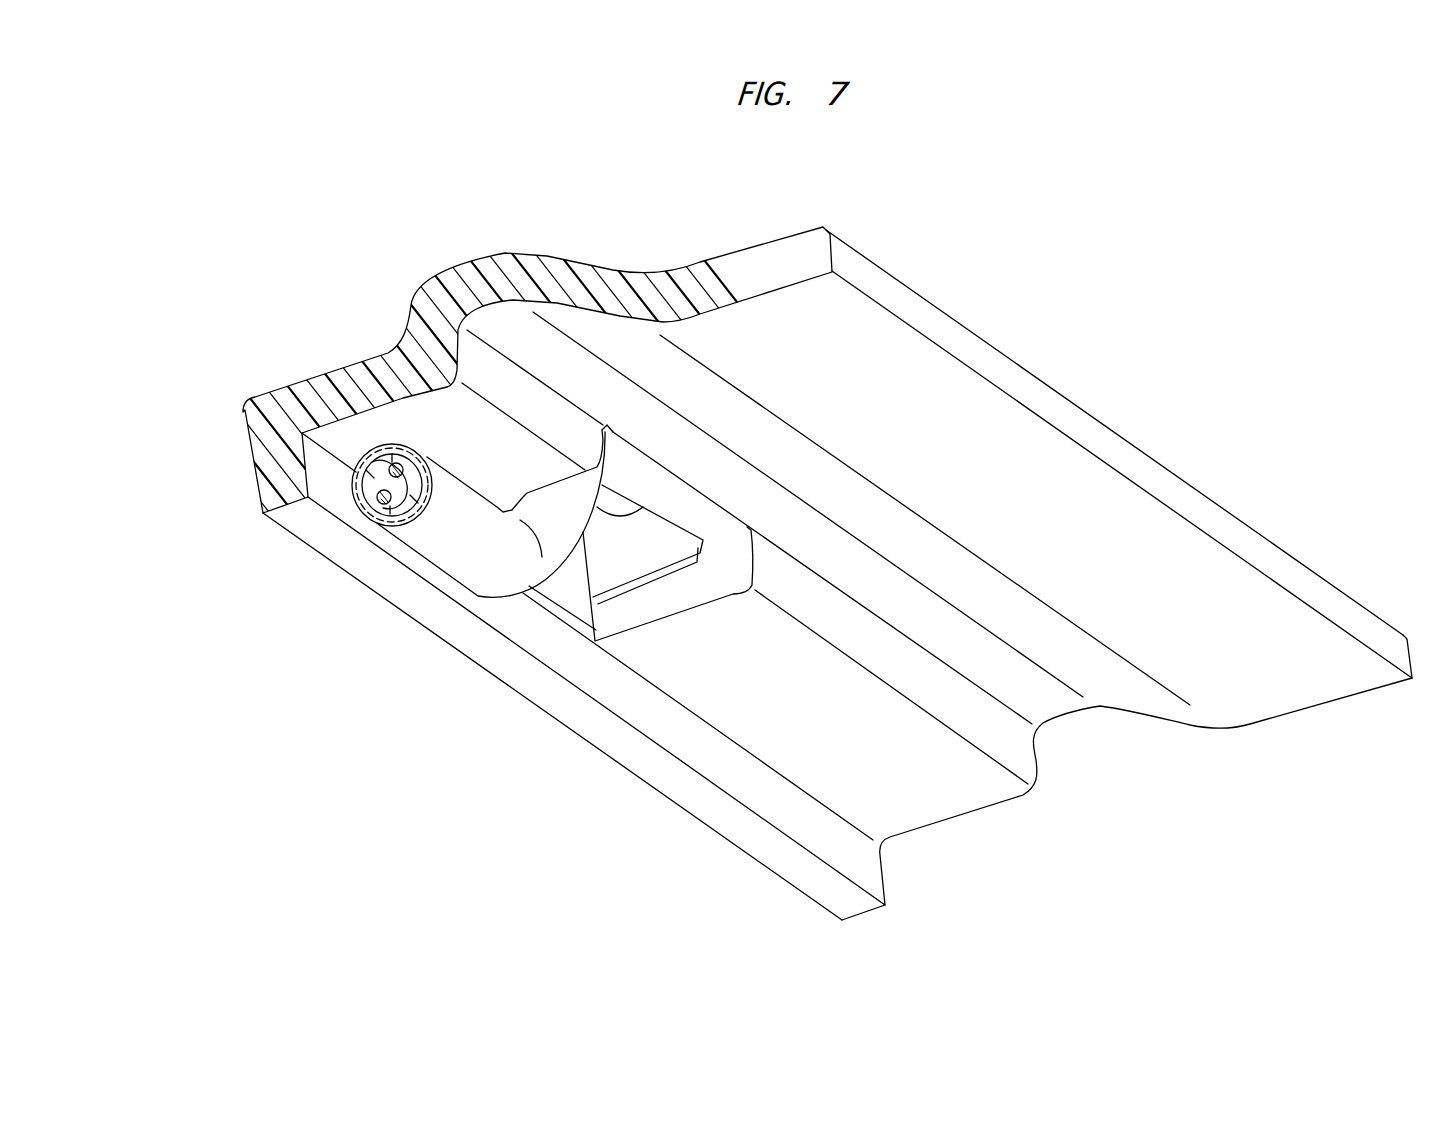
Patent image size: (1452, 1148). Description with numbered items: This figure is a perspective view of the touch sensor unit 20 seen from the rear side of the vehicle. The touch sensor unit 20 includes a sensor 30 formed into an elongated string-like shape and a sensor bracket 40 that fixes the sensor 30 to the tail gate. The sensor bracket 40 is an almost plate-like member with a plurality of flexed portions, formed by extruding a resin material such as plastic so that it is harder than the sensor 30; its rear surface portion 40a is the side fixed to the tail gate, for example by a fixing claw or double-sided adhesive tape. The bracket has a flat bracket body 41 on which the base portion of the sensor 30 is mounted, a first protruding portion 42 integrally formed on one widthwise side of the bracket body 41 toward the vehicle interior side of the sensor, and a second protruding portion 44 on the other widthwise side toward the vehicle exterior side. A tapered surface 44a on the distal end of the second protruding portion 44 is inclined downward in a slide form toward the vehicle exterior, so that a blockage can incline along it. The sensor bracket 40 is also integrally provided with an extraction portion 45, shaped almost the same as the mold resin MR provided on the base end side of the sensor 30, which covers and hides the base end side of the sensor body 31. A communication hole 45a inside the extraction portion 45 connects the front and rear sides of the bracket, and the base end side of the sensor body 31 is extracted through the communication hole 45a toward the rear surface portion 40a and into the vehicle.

The touch sensor unit 20 is at (1275, 352).
The sensor 30 is at (505, 615).
The sensor body 31 is at (420, 573).
The sensor bracket 40 is at (1050, 370).
The rear surface portion 40a is at (1054, 524).
The bracket body 41 is at (357, 390).
The first protruding portion 42 is at (463, 265).
The second protruding portion 44 is at (253, 385).
The tapered surface 44a is at (248, 406).
The extraction portion 45 is at (570, 558).
The communication hole 45a is at (692, 583).
The mold resin MR is at (645, 540).